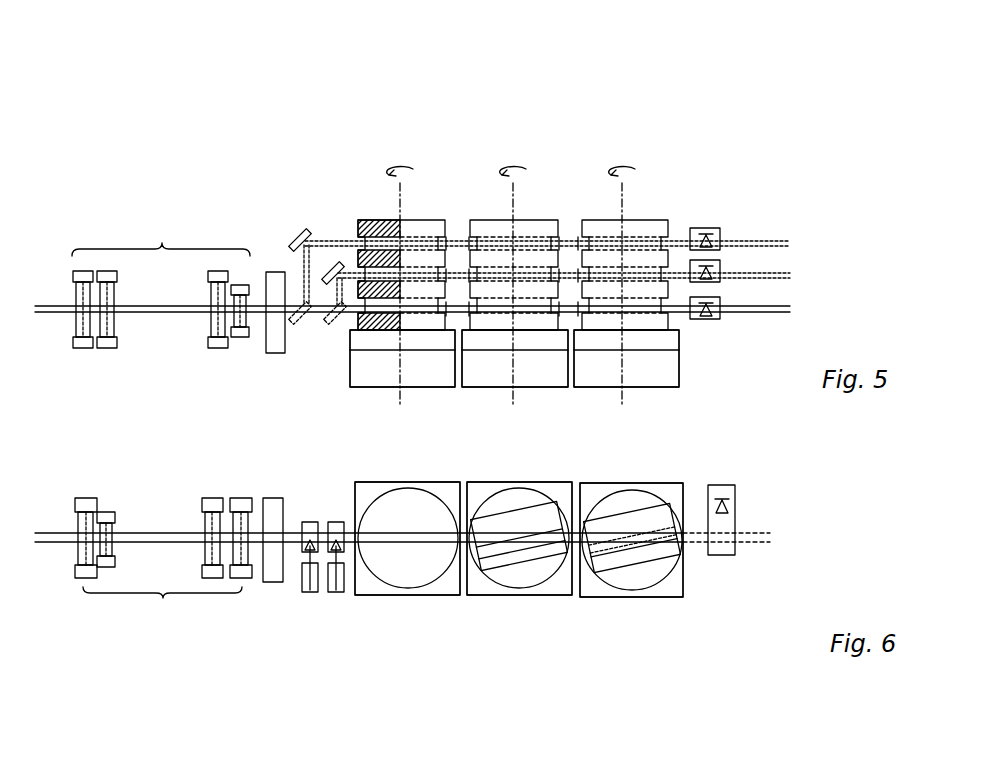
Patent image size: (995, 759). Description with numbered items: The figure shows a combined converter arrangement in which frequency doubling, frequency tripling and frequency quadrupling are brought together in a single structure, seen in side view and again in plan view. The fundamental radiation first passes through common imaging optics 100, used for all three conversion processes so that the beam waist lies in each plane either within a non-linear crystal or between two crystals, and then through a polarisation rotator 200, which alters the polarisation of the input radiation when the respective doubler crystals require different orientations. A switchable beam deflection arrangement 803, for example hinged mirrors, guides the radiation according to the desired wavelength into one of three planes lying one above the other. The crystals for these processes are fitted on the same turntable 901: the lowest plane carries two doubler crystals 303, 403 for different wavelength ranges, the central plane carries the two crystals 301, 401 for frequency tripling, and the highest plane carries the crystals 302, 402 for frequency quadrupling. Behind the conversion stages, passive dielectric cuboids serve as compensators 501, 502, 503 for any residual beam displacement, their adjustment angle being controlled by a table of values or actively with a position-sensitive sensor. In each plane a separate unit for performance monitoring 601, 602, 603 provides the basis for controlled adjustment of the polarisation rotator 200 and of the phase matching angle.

In FIG. 5, the imaging optics 100 is at (161, 280).
In FIG. 6, the imaging optics 100 is at (163, 607).
In FIG. 5, the polarisation rotator 200 is at (275, 290).
In FIG. 6, the polarisation rotator 200 is at (272, 557).
In FIG. 5, the crystal for frequency tripling 301 is at (428, 307).
In FIG. 5, the crystal for frequency quadrupling 302 is at (423, 275).
In FIG. 5, the non-linear crystal 303 is at (440, 278).
In FIG. 6, the non-linear crystal 303 is at (406, 555).
In FIG. 5, the crystal for frequency tripling 401 is at (536, 273).
In FIG. 5, the crystal for frequency quadrupling 402 is at (533, 240).
In FIG. 5, the doubler crystal 403 is at (540, 308).
In FIG. 6, the doubler crystal 403 is at (527, 555).
In FIG. 5, the compensator 501 is at (648, 272).
In FIG. 5, the compensator 502 is at (643, 240).
In FIG. 5, the compensator 503 is at (650, 307).
In FIG. 6, the compensator 503 is at (632, 555).
In FIG. 5, the performance monitoring unit 601 is at (719, 262).
In FIG. 5, the performance monitoring unit 602 is at (716, 229).
In FIG. 5, the performance monitoring unit 603 is at (723, 298).
In FIG. 6, the performance monitoring unit 603 is at (722, 548).
In FIG. 5, the switchable beam deflection arrangement 803 is at (335, 307).
In FIG. 6, the switchable beam deflection arrangement 803 is at (313, 592).
In FIG. 5, the turntable 901 is at (648, 418).
In FIG. 6, the turntable 901 is at (673, 490).